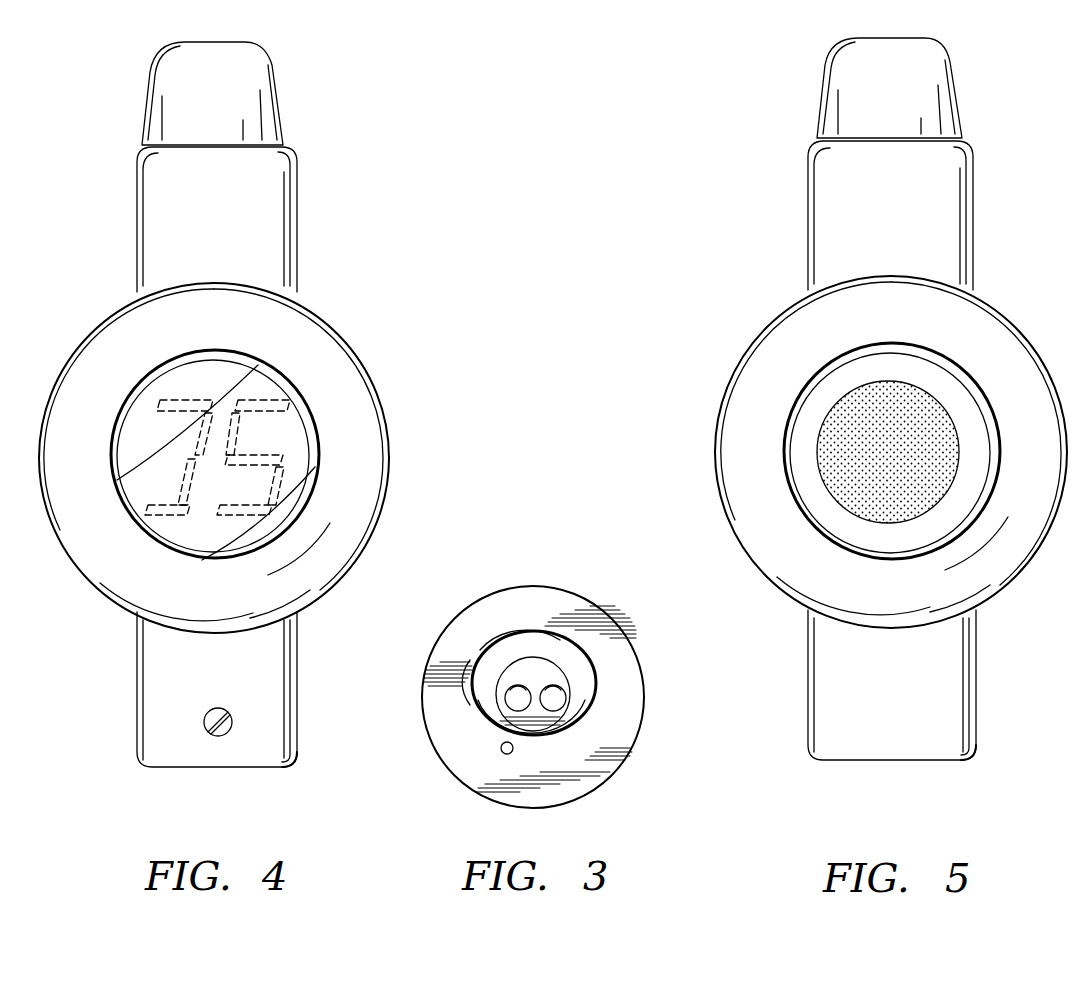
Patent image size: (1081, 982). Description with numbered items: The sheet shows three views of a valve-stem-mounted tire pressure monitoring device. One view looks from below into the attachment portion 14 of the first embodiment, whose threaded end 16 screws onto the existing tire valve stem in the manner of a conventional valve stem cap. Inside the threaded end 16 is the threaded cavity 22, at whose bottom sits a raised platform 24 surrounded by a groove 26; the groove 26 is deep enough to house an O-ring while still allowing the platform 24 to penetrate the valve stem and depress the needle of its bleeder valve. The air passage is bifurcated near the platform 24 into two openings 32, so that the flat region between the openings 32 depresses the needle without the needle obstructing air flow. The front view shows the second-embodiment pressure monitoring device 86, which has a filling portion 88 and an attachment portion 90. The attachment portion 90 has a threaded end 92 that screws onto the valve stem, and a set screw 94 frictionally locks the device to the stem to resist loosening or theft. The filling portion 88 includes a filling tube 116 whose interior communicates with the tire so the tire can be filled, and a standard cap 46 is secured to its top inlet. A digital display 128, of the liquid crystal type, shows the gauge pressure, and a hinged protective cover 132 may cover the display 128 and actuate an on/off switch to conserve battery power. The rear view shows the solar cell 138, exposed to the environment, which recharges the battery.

In FIG. 3, the attachment portion 14 is at (642, 604).
In FIG. 3, the threaded end 16 is at (625, 703).
In FIG. 3, the threaded cavity 22 is at (507, 748).
In FIG. 3, the raised platform 24 is at (540, 673).
In FIG. 3, the groove 26 is at (487, 723).
In FIG. 3, the openings 32 is at (520, 698).
In FIG. 4, the cap 46 is at (240, 65).
In FIG. 5, the cap 46 is at (935, 105).
In FIG. 4, the pressure monitoring device 86 is at (240, 214).
In FIG. 5, the pressure monitoring device 86 is at (881, 224).
In FIG. 4, the filling portion 88 is at (302, 189).
In FIG. 5, the filling portion 88 is at (990, 214).
In FIG. 4, the attachment portion 90 is at (120, 709).
In FIG. 5, the attachment portion 90 is at (792, 760).
In FIG. 4, the threaded end 92 is at (277, 767).
In FIG. 5, the threaded end 92 is at (950, 757).
In FIG. 4, the set screw 94 is at (204, 735).
In FIG. 4, the filling tube 116 is at (163, 242).
In FIG. 5, the filling tube 116 is at (868, 232).
In FIG. 4, the digital display 128 is at (292, 408).
In FIG. 4, the protective cover 132 is at (300, 466).
In FIG. 5, the solar cell 138 is at (897, 422).